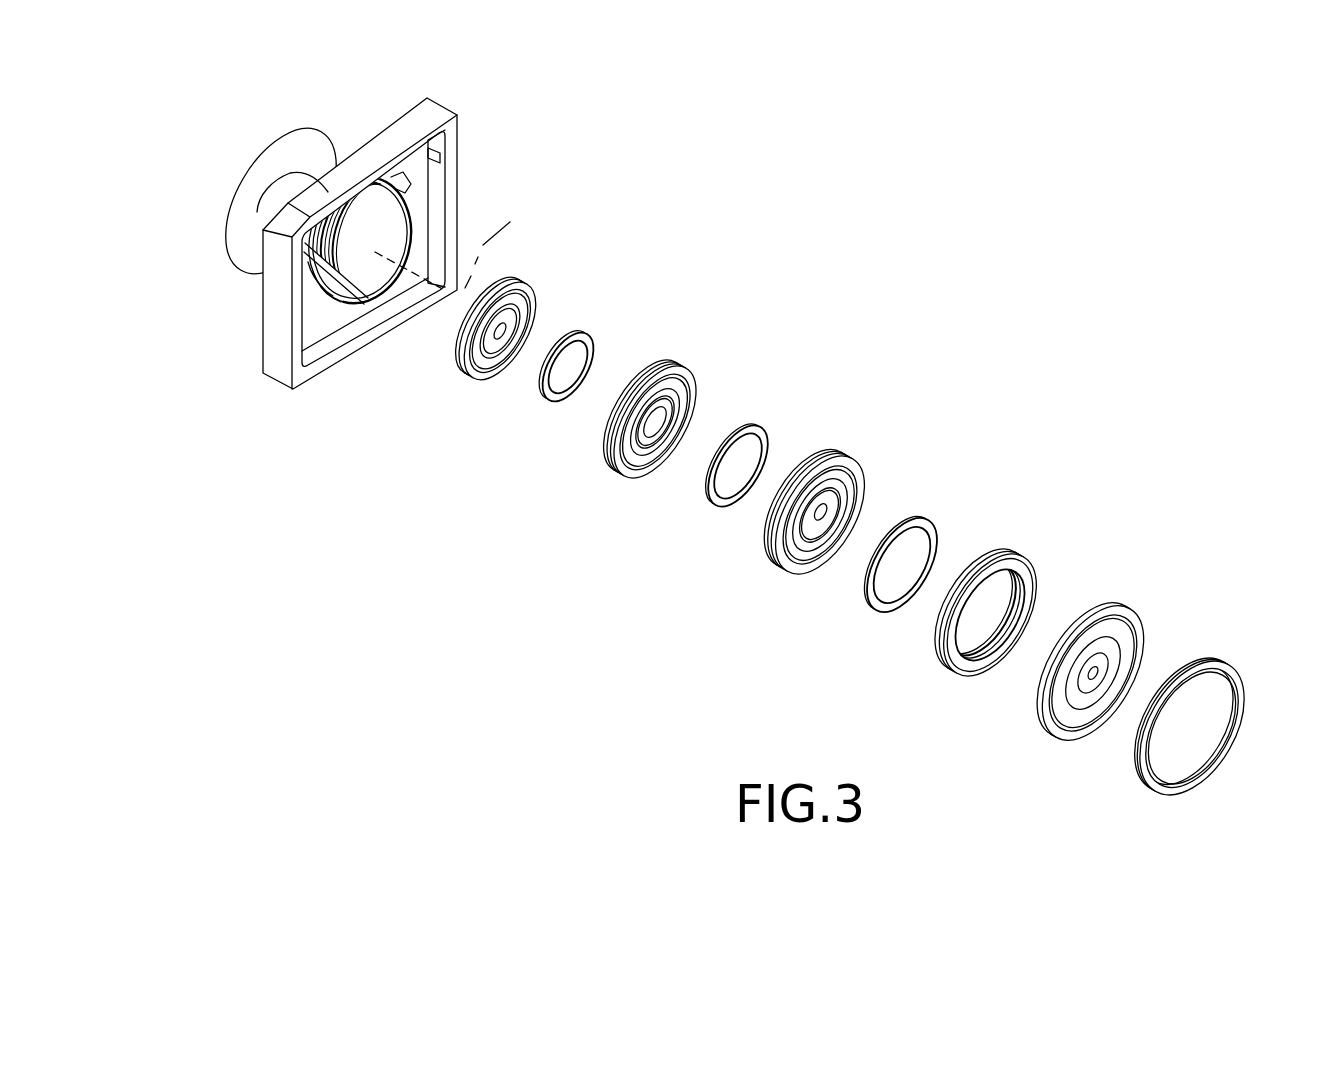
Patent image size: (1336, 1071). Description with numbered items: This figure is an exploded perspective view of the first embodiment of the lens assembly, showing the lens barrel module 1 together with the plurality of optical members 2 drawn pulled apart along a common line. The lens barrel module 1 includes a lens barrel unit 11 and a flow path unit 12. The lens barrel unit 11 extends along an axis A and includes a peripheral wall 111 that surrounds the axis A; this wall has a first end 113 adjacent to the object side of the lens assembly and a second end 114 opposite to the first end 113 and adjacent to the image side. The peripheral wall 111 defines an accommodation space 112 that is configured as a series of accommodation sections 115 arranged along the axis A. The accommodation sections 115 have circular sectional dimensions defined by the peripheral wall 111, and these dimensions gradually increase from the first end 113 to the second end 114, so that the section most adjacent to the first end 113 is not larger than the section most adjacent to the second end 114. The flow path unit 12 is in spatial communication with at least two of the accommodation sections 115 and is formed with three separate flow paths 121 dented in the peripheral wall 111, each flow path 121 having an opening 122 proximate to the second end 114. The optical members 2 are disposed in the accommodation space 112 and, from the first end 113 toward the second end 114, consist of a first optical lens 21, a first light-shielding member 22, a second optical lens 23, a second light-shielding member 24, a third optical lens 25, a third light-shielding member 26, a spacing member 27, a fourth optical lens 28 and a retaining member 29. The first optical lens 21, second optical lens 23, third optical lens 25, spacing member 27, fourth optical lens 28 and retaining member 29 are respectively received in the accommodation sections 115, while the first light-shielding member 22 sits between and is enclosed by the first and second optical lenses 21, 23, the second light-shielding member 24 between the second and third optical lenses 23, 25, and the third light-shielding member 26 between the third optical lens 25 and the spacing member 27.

The lens barrel module 1 is at (470, 125).
The lens barrel unit 11 is at (275, 325).
The peripheral wall 111 is at (330, 327).
The accommodation space 112 is at (358, 296).
The first end 113 is at (263, 157).
The second end 114 is at (398, 330).
The accommodation sections 115 is at (367, 173).
The flow path unit 12 is at (353, 300).
The flow path 121 is at (313, 223).
The opening 122 is at (328, 302).
The axis A is at (503, 239).
The optical members 2 is at (688, 338).
The first optical lens 21 is at (532, 280).
The first light-shielding member 22 is at (593, 336).
The second optical lens 23 is at (697, 383).
The second light-shielding member 24 is at (763, 428).
The third optical lens 25 is at (850, 457).
The third light-shielding member 26 is at (920, 523).
The spacing member 27 is at (1040, 571).
The fourth optical lens 28 is at (1121, 624).
The retaining member 29 is at (1218, 658).